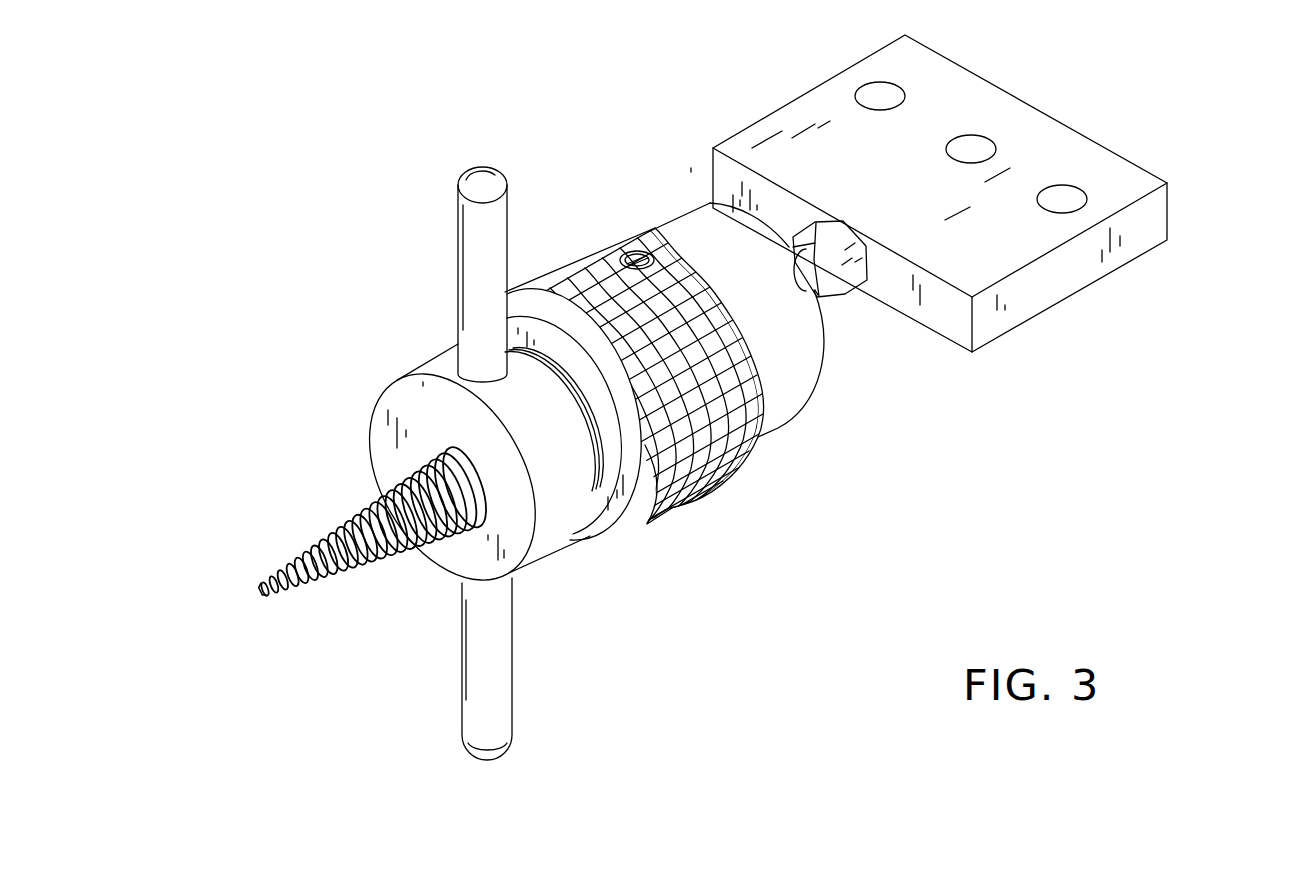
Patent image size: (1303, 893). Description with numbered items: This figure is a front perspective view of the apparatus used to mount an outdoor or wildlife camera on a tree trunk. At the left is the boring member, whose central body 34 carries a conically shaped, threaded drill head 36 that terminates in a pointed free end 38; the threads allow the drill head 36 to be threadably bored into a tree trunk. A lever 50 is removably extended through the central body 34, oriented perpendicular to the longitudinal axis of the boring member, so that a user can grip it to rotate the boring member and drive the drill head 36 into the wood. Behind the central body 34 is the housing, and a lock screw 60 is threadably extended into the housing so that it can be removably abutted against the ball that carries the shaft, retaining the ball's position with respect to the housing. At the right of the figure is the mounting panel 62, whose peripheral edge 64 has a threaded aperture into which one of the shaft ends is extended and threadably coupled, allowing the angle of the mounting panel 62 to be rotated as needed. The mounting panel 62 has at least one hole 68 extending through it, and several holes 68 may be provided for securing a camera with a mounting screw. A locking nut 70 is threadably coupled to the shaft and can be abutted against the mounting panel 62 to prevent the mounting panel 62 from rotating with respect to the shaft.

The central body 34 is at (579, 389).
The drill head 36 is at (346, 576).
The free end 38 is at (262, 592).
The lever 50 is at (505, 182).
The lock screw 60 is at (634, 256).
The mounting panel 62 is at (973, 187).
The peripheral edge 64 is at (1113, 263).
The hole 68 is at (981, 140).
The locking nut 70 is at (848, 292).